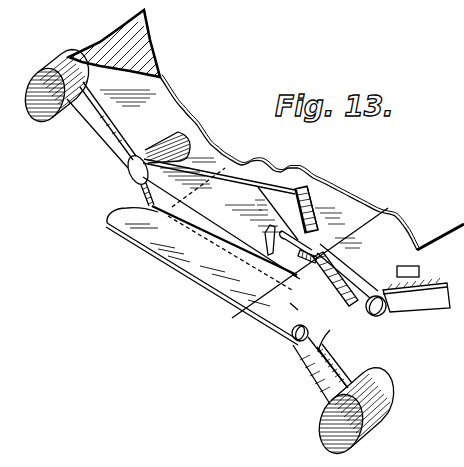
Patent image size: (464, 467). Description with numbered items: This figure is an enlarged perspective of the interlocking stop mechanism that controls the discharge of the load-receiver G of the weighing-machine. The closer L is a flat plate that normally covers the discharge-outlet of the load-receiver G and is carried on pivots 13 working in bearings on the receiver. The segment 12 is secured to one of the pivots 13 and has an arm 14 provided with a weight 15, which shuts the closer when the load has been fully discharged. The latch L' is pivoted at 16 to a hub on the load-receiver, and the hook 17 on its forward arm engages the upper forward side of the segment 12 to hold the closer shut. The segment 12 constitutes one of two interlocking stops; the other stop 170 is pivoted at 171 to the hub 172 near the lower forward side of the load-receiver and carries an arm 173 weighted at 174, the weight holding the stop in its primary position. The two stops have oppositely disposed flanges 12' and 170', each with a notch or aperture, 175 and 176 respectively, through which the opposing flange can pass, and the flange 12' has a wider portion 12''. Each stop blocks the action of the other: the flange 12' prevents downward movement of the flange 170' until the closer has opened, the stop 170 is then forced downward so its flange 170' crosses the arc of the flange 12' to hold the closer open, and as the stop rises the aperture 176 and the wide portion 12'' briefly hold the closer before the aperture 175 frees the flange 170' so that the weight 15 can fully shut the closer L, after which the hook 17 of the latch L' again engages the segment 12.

The load-receiver G is at (141, 58).
The weight 174 is at (52, 120).
The arm 173 is at (104, 134).
The pivot 171 is at (130, 176).
The hub 172 is at (186, 142).
The stop 170 is at (220, 214).
The aperture 176 is at (309, 200).
The flange 170' is at (339, 204).
The hook 17 is at (302, 242).
The aperture 175 is at (323, 257).
The closer L is at (203, 276).
The latch L' is at (383, 274).
The pivot 16 is at (383, 314).
The segment 12 is at (335, 303).
The flange 12' is at (271, 323).
The wide portion 12'' is at (253, 303).
The pivot 13 is at (293, 340).
The arm 14 is at (322, 388).
The weight 15 is at (397, 421).